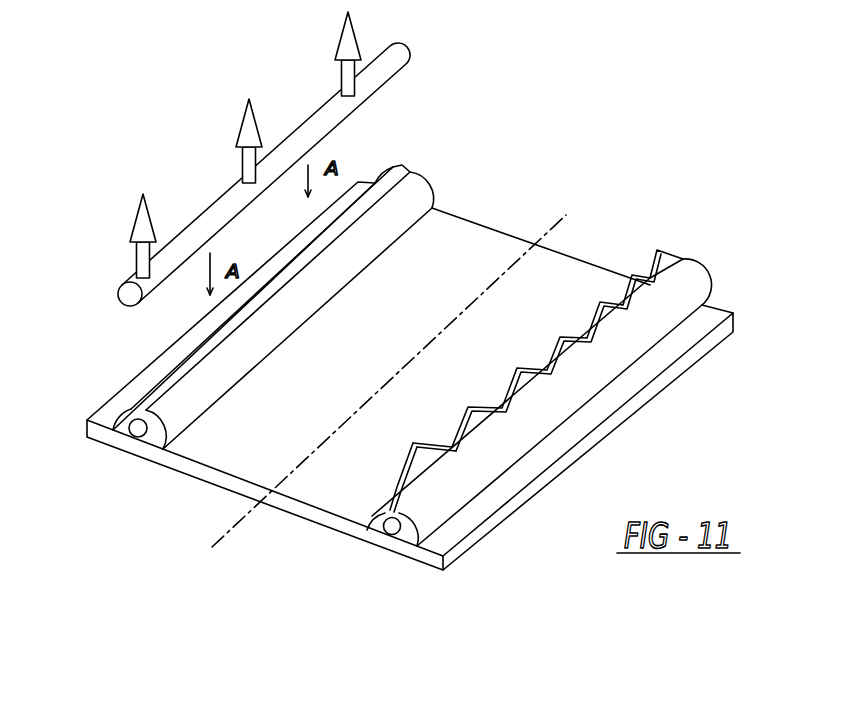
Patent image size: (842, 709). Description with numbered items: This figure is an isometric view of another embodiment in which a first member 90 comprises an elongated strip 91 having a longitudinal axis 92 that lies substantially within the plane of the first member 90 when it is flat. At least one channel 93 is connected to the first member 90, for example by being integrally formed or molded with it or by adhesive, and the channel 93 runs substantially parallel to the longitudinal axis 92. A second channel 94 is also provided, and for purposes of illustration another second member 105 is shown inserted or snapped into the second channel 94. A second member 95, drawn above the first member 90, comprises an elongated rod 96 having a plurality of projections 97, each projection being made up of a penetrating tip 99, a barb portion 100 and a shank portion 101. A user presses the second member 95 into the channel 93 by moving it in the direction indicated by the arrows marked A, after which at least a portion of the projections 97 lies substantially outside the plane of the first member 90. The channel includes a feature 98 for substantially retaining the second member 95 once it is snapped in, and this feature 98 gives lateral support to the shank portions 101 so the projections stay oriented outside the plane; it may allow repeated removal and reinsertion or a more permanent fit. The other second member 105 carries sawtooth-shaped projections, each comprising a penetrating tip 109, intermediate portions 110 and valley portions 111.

The first member 90 is at (598, 237).
The elongated strip 91 is at (453, 250).
The longitudinal axis 92 is at (213, 541).
The channel 93 is at (125, 437).
The second channel 94 is at (388, 545).
The second member 95 is at (264, 159).
The elongated rod 96 is at (307, 120).
The plurality of projections 97 is at (277, 145).
The feature 98 is at (158, 428).
The penetrating tip 99 is at (256, 118).
The barb portion 100 is at (213, 99).
The shank portion 101 is at (242, 168).
The second member 105 is at (563, 356).
The penetrating tip 109 is at (528, 381).
The intermediate portions 110 is at (456, 425).
The valley portions 111 is at (450, 444).